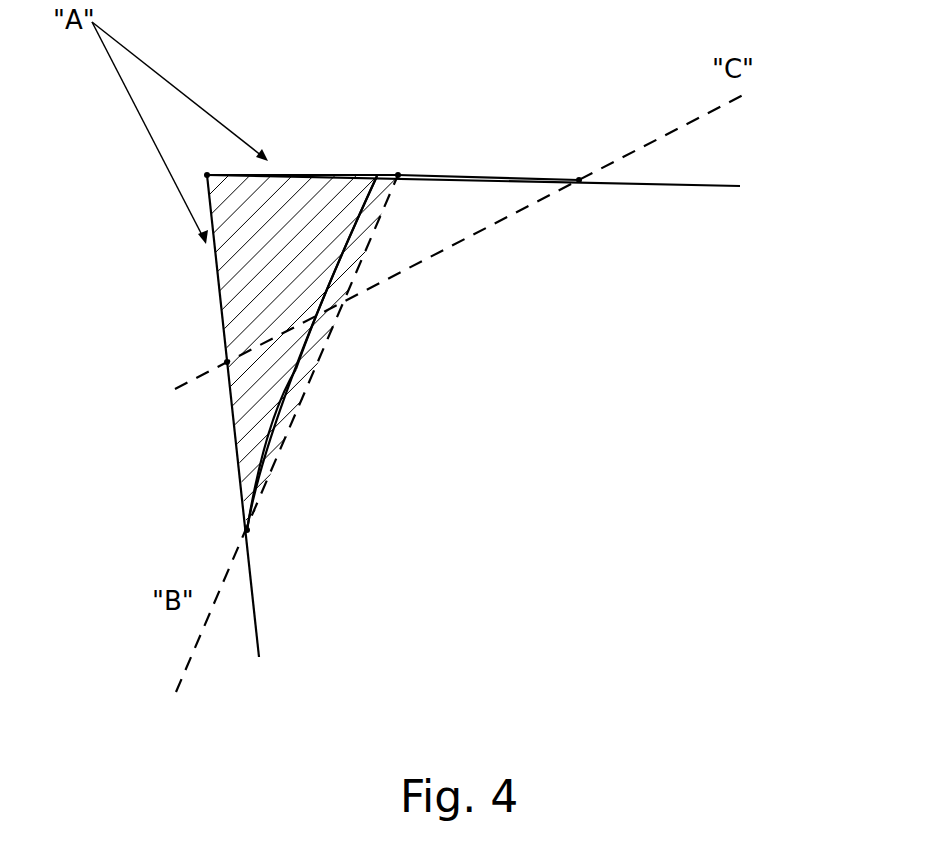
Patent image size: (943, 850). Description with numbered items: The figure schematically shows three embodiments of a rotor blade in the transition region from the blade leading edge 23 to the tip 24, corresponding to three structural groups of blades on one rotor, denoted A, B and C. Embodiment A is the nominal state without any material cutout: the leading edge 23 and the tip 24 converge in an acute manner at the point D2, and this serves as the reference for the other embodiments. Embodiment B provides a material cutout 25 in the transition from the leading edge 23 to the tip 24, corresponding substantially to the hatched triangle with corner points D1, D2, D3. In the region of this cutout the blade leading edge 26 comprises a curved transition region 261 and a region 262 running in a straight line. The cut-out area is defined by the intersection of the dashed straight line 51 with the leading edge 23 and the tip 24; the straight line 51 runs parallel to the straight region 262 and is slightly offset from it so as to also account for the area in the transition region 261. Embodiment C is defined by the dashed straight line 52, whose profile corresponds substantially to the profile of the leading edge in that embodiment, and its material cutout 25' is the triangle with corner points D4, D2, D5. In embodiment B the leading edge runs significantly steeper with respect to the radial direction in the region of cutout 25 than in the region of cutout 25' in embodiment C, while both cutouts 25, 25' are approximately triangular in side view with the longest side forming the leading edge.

The blade leading edge 23 is at (258, 638).
The tip 24 is at (705, 183).
The material cutout 25 is at (302, 124).
The material cutout 25' is at (488, 127).
The blade leading edge in the region of the cutout 26 is at (342, 258).
The curved transition region 261 is at (256, 488).
The region running in a straight line 262 is at (323, 317).
The straight line 51 is at (199, 638).
The straight line 52 is at (453, 246).
The corner point D1 is at (228, 529).
The point D2 is at (210, 160).
The corner point D3 is at (401, 160).
The corner point D4 is at (210, 349).
The corner point D5 is at (582, 163).